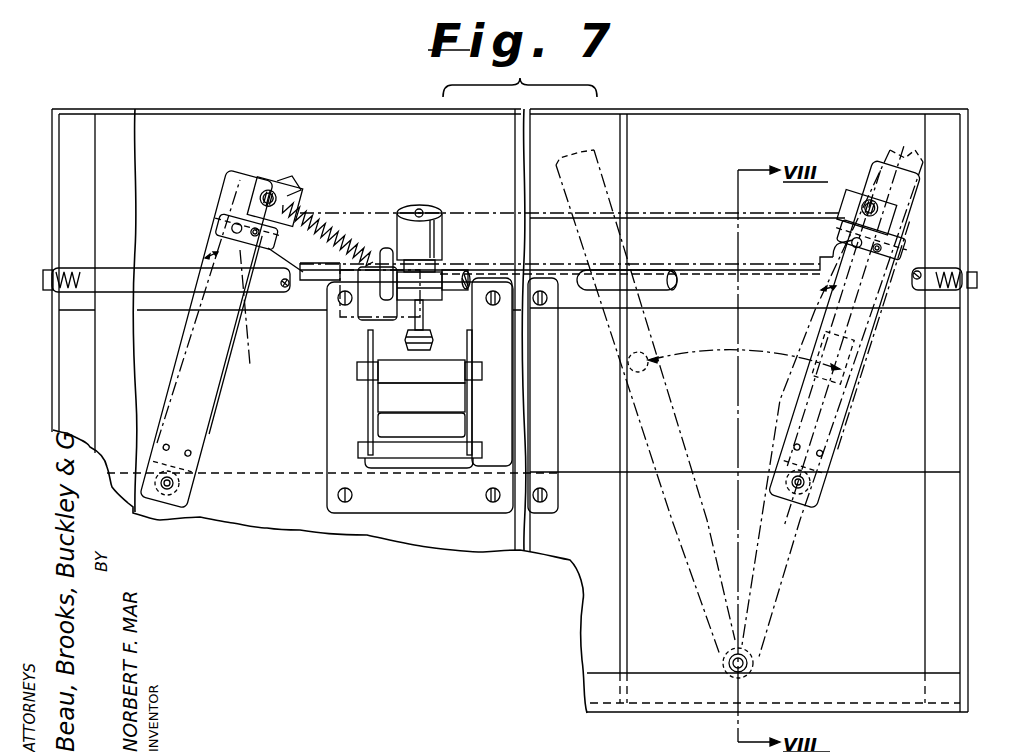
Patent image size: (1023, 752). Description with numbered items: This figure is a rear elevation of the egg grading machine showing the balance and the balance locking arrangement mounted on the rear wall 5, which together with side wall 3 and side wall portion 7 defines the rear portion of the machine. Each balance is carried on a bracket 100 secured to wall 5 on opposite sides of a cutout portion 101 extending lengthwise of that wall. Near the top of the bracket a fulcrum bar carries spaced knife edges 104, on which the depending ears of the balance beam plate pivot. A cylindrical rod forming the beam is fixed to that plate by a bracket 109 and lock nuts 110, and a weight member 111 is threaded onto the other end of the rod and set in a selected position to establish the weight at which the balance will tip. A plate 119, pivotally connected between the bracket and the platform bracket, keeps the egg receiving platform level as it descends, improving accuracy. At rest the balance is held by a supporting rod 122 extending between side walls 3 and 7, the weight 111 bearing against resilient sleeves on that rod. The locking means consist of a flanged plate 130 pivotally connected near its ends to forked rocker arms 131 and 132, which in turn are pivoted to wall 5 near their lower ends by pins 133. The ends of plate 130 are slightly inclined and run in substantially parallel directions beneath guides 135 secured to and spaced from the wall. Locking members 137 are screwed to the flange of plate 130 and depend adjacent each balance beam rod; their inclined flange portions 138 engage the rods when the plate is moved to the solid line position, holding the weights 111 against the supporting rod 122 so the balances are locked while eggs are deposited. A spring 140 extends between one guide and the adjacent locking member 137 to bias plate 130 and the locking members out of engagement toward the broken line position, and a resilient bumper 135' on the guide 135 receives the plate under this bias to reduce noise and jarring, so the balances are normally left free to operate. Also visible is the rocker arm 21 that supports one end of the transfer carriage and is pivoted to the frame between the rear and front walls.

The side wall 3 is at (968, 360).
The rear wall 5 is at (363, 126).
The side wall portion 7 is at (52, 360).
The rocker arm 21 is at (795, 552).
The bracket 100 is at (436, 515).
The cutout portion 101 is at (866, 471).
The knife edges 104 is at (382, 366).
The bracket 109 is at (428, 346).
The lock nuts 110 is at (419, 392).
The weight member 111 is at (423, 211).
The plate 119 is at (437, 430).
The supporting rod 122 is at (157, 269).
The flanged plate 130 is at (673, 218).
The forked rocker arm 131 is at (233, 360).
The forked rocker arm 132 is at (843, 417).
The pins 133 is at (188, 492).
The guides 135 is at (254, 209).
The resilient bumper 135' is at (275, 157).
The locking member 137 is at (383, 293).
The inclined flange portion 138 is at (374, 321).
The spring 140 is at (324, 247).